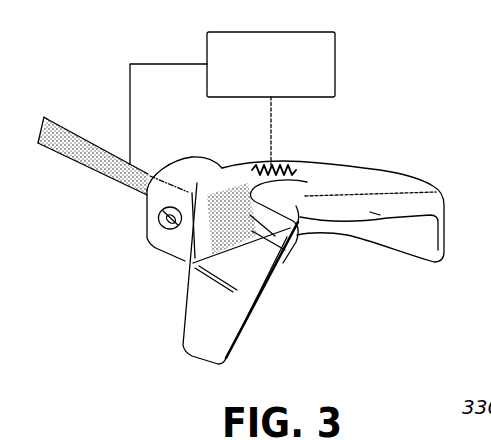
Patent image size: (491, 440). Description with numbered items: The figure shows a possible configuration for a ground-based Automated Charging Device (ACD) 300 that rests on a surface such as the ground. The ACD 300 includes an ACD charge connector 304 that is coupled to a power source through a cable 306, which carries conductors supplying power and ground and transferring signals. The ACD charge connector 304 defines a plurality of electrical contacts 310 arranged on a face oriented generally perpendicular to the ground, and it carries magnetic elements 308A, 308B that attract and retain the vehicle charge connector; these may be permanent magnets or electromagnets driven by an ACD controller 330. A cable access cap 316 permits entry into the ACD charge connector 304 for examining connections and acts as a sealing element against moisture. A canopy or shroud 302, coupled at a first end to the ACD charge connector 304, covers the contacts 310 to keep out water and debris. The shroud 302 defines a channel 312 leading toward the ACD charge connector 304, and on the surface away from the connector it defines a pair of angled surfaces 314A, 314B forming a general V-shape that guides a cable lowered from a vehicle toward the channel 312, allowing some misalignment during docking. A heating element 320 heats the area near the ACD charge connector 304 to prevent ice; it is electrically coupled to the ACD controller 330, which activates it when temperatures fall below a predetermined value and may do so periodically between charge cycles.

The Automated Charging Device 300 is at (262, 208).
The shroud 302 is at (350, 211).
The ACD charge connector 304 is at (138, 170).
The cable 306 is at (107, 148).
The magnetic element 308A is at (180, 286).
The magnetic element 308B is at (173, 258).
The electrical contacts 310 is at (290, 250).
The channel 312 is at (305, 198).
The angled surface 314A is at (263, 277).
The angled surface 314B is at (390, 215).
The cable access cap 316 is at (153, 226).
The heating element 320 is at (280, 163).
The ACD controller 330 is at (300, 32).